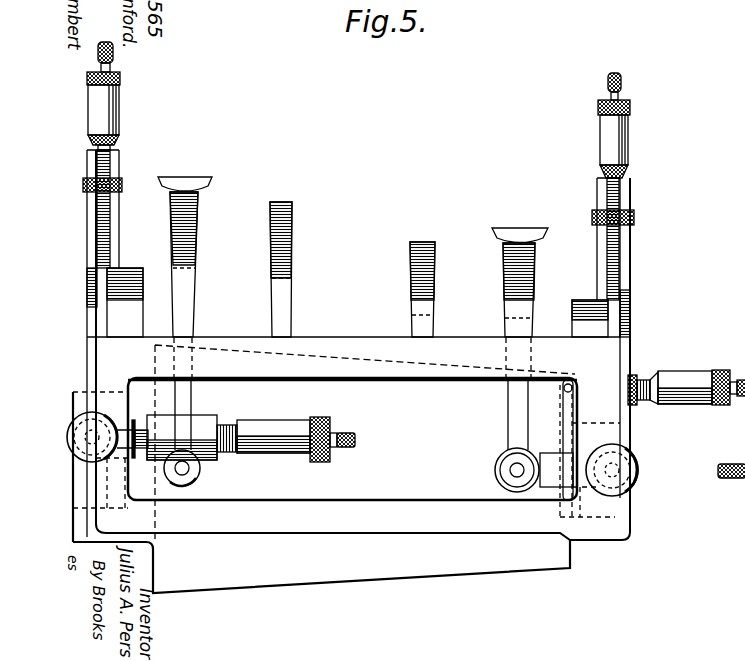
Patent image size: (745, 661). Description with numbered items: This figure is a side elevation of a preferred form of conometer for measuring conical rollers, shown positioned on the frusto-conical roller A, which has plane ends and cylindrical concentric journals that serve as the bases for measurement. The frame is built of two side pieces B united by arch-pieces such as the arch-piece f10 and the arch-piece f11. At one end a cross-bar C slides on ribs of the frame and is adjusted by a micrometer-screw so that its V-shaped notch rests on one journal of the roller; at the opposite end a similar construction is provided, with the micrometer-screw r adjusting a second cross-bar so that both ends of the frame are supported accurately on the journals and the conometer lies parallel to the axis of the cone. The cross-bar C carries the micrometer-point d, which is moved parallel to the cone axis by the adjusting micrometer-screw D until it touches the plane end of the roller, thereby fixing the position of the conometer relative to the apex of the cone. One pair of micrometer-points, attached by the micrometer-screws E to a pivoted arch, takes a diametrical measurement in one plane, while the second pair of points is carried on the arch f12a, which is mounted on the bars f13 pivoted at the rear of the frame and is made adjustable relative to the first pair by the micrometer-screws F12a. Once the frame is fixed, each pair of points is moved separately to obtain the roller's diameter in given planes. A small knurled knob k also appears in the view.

The frusto-conical roller A is at (352, 371).
The side pieces of the frame B is at (377, 503).
The micrometer-screw r is at (117, 103).
The arch-piece f10 is at (127, 270).
The arch-piece f11 is at (294, 228).
The arch f12a is at (428, 242).
The bars f13 is at (628, 320).
The cross-bar C is at (618, 132).
The micrometer-screw D is at (680, 373).
The micrometer-point d is at (569, 384).
The micrometer-screws E is at (205, 480).
The micrometer-screws F12a is at (327, 413).
The knurled knob k is at (718, 515).